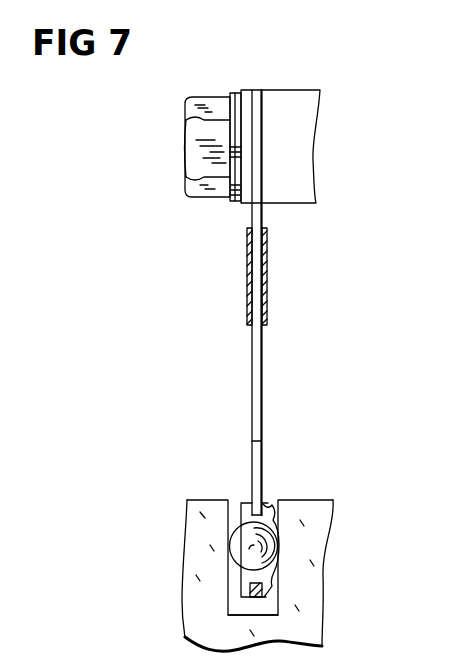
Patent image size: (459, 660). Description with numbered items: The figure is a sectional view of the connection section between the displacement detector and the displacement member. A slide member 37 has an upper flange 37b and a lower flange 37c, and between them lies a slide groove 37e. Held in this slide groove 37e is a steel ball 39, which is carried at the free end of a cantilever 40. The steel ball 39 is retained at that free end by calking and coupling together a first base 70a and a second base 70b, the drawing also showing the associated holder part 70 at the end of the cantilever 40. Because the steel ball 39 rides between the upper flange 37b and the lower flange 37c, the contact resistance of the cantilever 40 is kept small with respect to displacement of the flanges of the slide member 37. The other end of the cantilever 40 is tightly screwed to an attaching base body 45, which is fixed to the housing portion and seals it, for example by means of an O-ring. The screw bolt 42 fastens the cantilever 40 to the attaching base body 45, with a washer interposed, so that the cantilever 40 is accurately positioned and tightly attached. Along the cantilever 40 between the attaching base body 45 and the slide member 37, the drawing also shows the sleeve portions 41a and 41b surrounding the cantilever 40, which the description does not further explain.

The screw bolt 42 is at (203, 100).
The attaching base body 45 is at (284, 103).
The cantilever 40 is at (257, 380).
The insulating sleeve 41a is at (246, 278).
The insulating sleeve 41b is at (268, 278).
The slide member 37 is at (308, 627).
The upper flange 37b is at (316, 514).
The lower flange 37c is at (197, 535).
The slide groove 37e is at (235, 604).
The first base 70a is at (233, 498).
The spring 70 is at (275, 500).
The steel ball 39 is at (268, 542).
The second base 70b is at (266, 588).